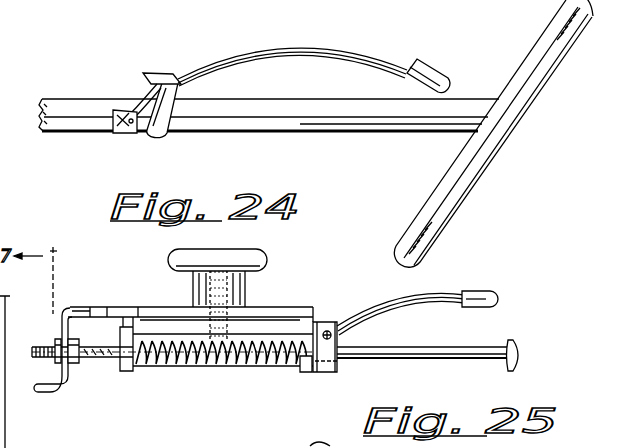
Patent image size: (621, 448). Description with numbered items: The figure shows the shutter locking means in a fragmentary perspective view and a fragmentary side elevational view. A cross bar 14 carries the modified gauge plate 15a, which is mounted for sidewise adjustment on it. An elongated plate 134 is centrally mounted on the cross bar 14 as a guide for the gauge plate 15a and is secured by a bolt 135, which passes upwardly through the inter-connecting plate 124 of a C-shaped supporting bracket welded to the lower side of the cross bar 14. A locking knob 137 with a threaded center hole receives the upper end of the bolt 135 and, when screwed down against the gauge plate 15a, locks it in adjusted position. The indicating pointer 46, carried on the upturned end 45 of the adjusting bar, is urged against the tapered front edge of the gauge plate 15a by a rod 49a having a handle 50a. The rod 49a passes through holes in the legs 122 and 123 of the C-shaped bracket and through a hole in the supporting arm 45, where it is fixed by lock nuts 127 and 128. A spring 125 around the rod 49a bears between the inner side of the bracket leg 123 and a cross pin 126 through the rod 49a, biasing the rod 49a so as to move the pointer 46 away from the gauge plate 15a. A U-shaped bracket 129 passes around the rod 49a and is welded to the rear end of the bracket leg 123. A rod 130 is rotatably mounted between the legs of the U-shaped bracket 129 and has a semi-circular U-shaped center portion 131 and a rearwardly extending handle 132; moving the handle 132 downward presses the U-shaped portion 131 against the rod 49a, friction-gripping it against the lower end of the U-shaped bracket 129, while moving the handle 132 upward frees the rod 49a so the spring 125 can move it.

In FIG. 25, the cross bar 14 is at (311, 322).
In FIG. 25, the gauge plate 15a is at (299, 305).
In FIG. 25, the upturned end 45 is at (63, 386).
In FIG. 25, the indicating pointer 46 is at (93, 307).
In FIG. 24, the rod 49a is at (342, 118).
In FIG. 25, the rod 49a is at (437, 354).
In FIG. 24, the handle 50a is at (477, 173).
In FIG. 25, the handle 50a is at (523, 353).
In FIG. 25, the bracket leg 122 is at (134, 366).
In FIG. 25, the bracket leg 123 is at (306, 374).
In FIG. 25, the inter-connecting plate 124 is at (281, 316).
In FIG. 25, the spring 125 is at (243, 366).
In FIG. 25, the cross pin 126 is at (133, 330).
In FIG. 25, the lock nut 127 is at (75, 340).
In FIG. 25, the lock nut 128 is at (56, 340).
In FIG. 24, the U-shaped bracket 129 is at (143, 134).
In FIG. 25, the U-shaped bracket 129 is at (327, 373).
In FIG. 24, the rod 130 is at (145, 91).
In FIG. 24, the U-shaped portion 131 is at (171, 134).
In FIG. 24, the handle 132 is at (300, 50).
In FIG. 25, the handle 132 is at (441, 297).
In FIG. 25, the elongated plate 134 is at (258, 332).
In FIG. 25, the bolt 135 is at (226, 310).
In FIG. 25, the locking knob 137 is at (173, 257).